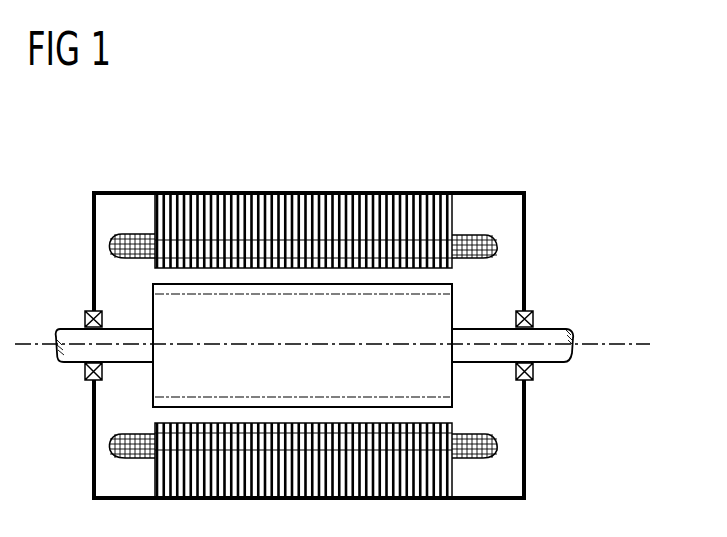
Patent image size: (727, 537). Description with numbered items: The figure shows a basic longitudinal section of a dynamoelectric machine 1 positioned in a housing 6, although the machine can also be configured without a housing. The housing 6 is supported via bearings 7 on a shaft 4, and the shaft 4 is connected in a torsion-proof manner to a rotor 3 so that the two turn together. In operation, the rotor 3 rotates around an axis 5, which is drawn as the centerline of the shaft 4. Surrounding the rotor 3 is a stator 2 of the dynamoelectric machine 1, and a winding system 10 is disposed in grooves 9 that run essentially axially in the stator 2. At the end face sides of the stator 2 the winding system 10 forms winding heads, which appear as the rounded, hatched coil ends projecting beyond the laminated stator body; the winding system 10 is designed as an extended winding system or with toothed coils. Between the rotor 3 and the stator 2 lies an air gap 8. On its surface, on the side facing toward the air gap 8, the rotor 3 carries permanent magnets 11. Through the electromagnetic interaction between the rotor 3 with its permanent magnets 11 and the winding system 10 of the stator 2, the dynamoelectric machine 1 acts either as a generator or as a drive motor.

The dynamoelectric machine 1 is at (436, 122).
The stator 2 is at (294, 214).
The rotor 3 is at (438, 307).
The shaft 4 is at (74, 355).
The axis 5 is at (632, 345).
The housing 6 is at (135, 190).
The bearings 7 is at (535, 367).
The air gap 8 is at (160, 275).
The grooves 9 is at (362, 242).
The winding system 10 is at (476, 242).
The permanent magnets 11 is at (440, 402).